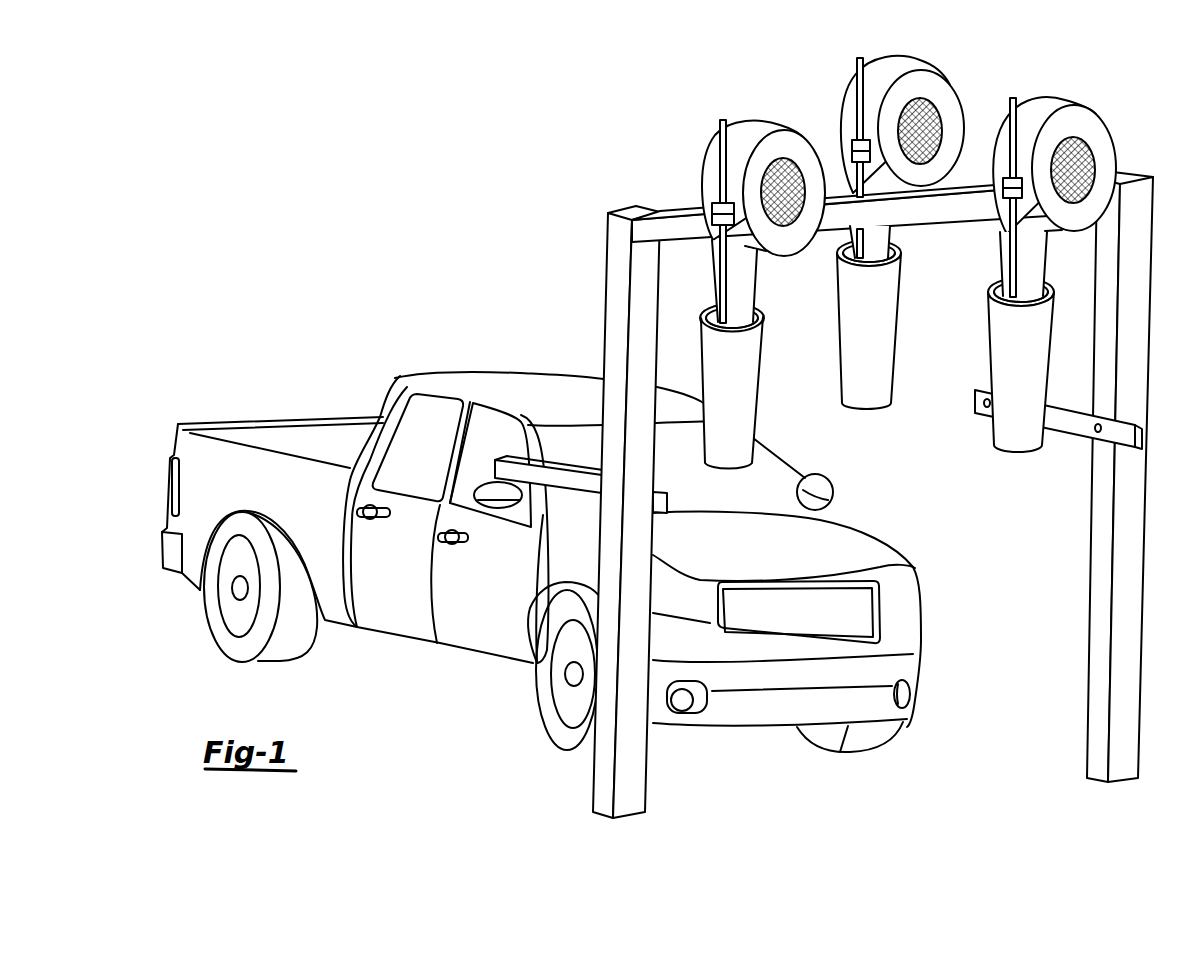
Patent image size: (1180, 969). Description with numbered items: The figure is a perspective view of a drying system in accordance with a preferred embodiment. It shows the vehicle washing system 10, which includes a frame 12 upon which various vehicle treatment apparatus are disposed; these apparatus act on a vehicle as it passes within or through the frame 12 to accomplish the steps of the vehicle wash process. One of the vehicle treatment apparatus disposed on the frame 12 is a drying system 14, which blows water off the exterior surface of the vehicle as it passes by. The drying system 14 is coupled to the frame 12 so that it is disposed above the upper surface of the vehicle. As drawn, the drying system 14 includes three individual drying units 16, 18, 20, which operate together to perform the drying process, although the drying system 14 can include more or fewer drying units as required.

The vehicle washing system 10 is at (508, 176).
The frame 12 is at (621, 288).
The drying system 14 is at (1018, 68).
The drying unit 16 is at (899, 70).
The drying unit 18 is at (756, 133).
The drying unit 20 is at (1048, 110).